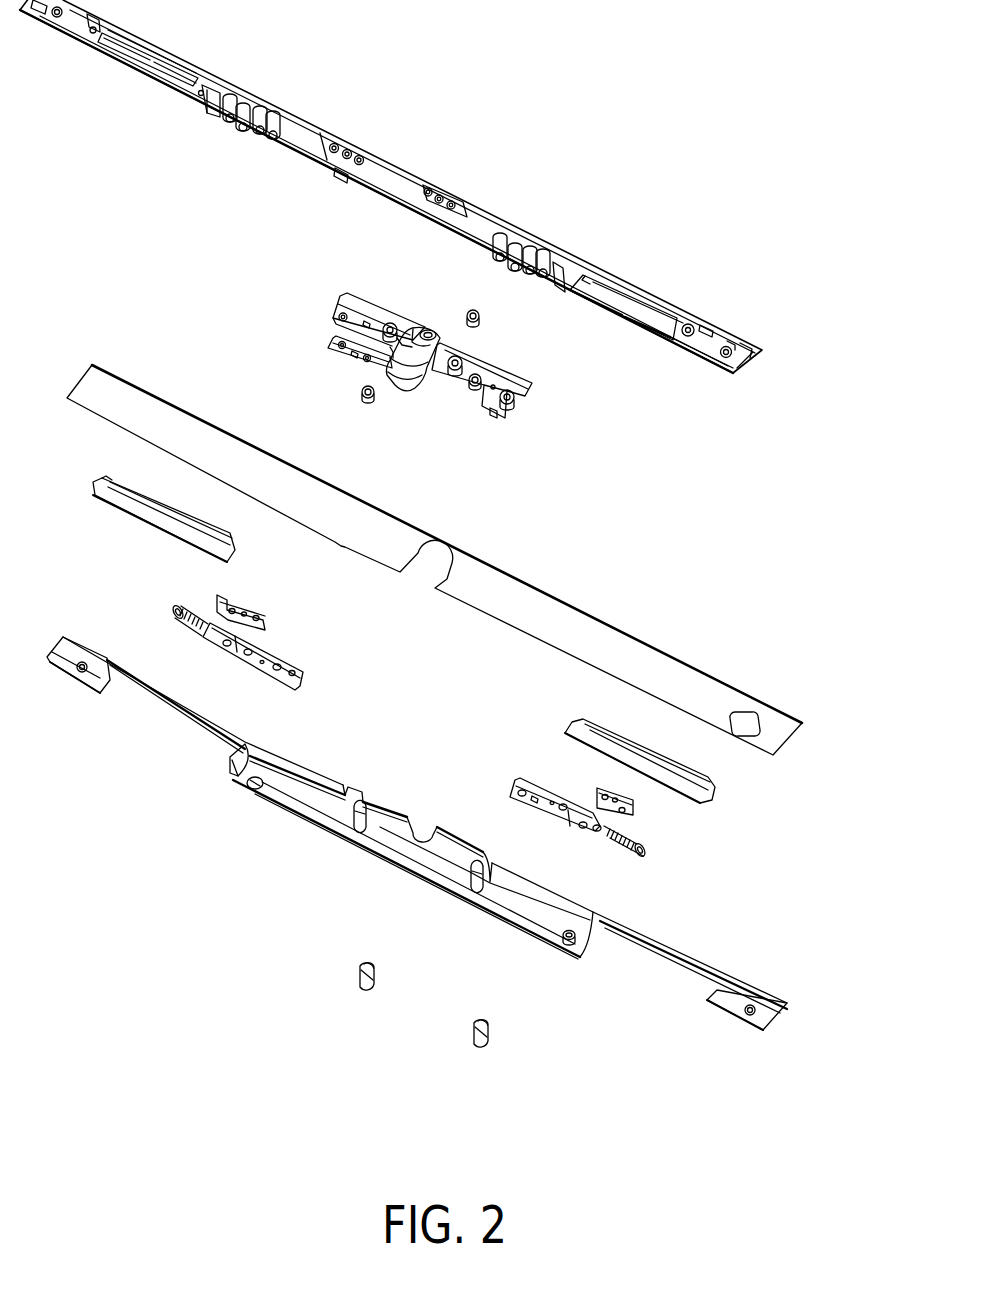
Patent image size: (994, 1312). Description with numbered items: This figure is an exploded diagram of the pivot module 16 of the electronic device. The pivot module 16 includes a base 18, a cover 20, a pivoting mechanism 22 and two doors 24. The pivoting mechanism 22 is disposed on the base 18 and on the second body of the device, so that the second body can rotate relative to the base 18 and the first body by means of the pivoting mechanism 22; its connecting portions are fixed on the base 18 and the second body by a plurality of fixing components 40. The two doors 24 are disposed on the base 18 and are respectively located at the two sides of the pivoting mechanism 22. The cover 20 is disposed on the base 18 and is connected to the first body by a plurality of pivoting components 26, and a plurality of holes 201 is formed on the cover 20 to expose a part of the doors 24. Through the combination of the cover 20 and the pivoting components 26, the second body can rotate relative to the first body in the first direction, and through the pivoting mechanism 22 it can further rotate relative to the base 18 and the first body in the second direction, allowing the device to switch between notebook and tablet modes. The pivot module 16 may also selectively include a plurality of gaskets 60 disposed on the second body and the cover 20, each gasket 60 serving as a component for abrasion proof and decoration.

The pivot module 16 is at (712, 105).
The base 18 is at (80, 30).
The cover 20 is at (417, 870).
The holes 201 is at (168, 730).
The pivoting mechanism 22 is at (503, 390).
The doors 24 is at (130, 505).
The pivoting components 26 is at (270, 657).
The fixing components 40 is at (471, 310).
The gaskets 60 is at (710, 702).